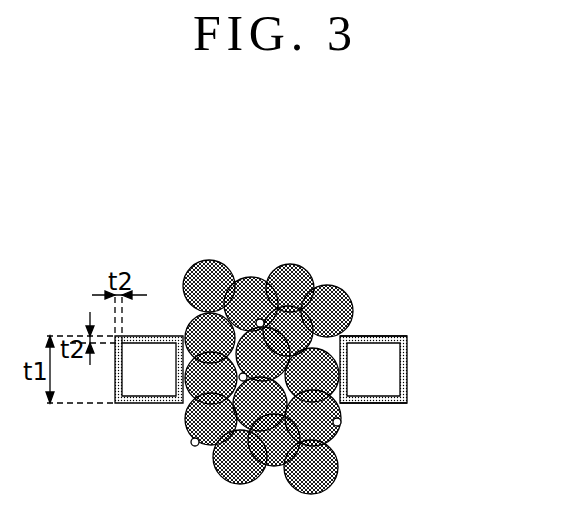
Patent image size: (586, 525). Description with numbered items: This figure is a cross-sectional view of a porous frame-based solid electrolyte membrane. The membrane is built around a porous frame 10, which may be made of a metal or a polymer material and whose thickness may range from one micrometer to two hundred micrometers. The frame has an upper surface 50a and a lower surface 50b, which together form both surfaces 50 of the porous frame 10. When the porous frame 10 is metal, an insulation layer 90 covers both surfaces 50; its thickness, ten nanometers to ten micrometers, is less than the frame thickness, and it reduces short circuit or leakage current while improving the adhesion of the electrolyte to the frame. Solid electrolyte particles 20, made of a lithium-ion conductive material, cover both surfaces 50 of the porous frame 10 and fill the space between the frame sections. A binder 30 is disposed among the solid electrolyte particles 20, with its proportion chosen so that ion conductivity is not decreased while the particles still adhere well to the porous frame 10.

The porous frame 10 is at (163, 353).
The solid electrolyte particles 20 is at (213, 270).
The binder 30 is at (260, 319).
The both surfaces 50 is at (444, 370).
The upper surface 50a is at (393, 336).
The lower surface 50b is at (419, 418).
The insulation layer 90 is at (368, 336).